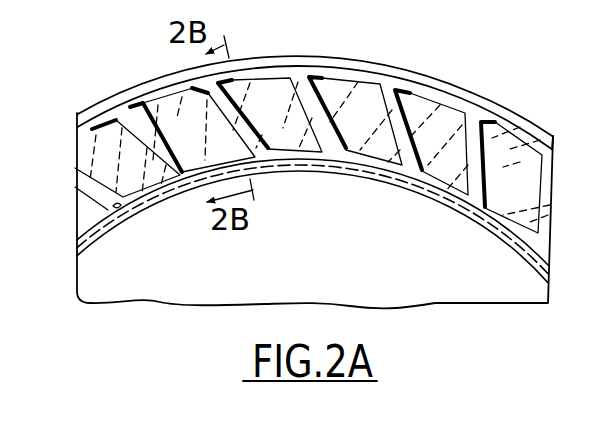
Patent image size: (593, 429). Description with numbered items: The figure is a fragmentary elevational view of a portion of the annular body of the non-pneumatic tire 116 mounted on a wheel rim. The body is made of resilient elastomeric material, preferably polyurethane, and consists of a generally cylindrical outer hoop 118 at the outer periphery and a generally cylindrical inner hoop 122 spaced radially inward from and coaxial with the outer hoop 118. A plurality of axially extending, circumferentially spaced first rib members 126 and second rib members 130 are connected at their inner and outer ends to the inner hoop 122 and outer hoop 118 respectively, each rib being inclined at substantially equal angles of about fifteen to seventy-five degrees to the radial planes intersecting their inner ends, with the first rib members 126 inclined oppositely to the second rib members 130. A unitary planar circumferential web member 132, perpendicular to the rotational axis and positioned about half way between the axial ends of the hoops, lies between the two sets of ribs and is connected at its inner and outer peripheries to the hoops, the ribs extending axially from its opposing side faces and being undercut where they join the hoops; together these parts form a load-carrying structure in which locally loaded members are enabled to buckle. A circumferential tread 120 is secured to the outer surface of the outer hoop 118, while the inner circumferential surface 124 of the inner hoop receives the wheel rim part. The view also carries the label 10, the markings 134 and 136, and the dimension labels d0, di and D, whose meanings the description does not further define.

The spacer assembly 10 is at (574, 104).
The non-pneumatic tire 116 is at (328, 66).
The outer cylindrical hoop 118 is at (477, 110).
The circumferential tread 120 is at (394, 70).
The outer rim thickness d0 is at (458, 100).
The inner circumferential surface 124 is at (371, 173).
The inner cylindrical hoop 122 is at (256, 172).
The inner rim thickness di is at (424, 192).
The inner rim detail 136 is at (118, 209).
The ribs 134 is at (192, 88).
The second rib members 130 is at (164, 118).
The first rib members 126 is at (313, 57).
The opening width D is at (272, 82).
The web member 132 is at (130, 176).